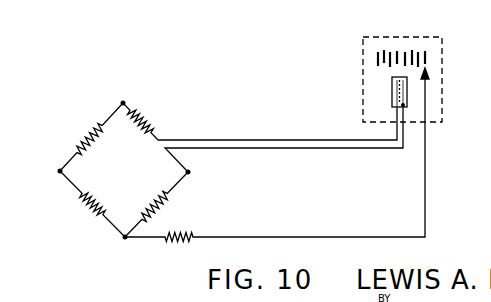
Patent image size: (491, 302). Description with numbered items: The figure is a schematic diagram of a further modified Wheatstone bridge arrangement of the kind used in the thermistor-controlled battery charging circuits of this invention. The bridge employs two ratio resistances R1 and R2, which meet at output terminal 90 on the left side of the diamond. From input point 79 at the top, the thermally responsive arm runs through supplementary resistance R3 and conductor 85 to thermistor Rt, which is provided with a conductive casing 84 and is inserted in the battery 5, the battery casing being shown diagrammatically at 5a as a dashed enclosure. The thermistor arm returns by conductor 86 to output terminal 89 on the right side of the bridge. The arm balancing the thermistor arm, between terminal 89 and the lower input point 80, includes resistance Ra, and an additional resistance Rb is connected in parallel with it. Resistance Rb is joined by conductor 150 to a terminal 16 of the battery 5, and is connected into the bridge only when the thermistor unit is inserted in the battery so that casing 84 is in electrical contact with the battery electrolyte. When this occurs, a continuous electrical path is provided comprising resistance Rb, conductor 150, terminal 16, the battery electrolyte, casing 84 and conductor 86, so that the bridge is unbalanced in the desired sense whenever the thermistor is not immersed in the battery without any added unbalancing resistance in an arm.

The battery 5 is at (409, 48).
The casing of battery 5a is at (442, 41).
The battery terminal 16 is at (430, 72).
The bridge input point 79 is at (125, 102).
The bridge input point 80 is at (123, 239).
The conductive casing 84 is at (401, 105).
The conductor 85 is at (250, 139).
The conductor 86 is at (243, 149).
The output terminal 89 is at (190, 172).
The output terminal 90 is at (58, 171).
The conductor 150 is at (290, 237).
The ratio resistance R1 is at (91, 137).
The ratio resistance R2 is at (92, 204).
The supplementary resistance R3 is at (140, 123).
The resistance Ra is at (156, 204).
The additional resistance Rb is at (162, 227).
The thermistor Rt is at (391, 82).